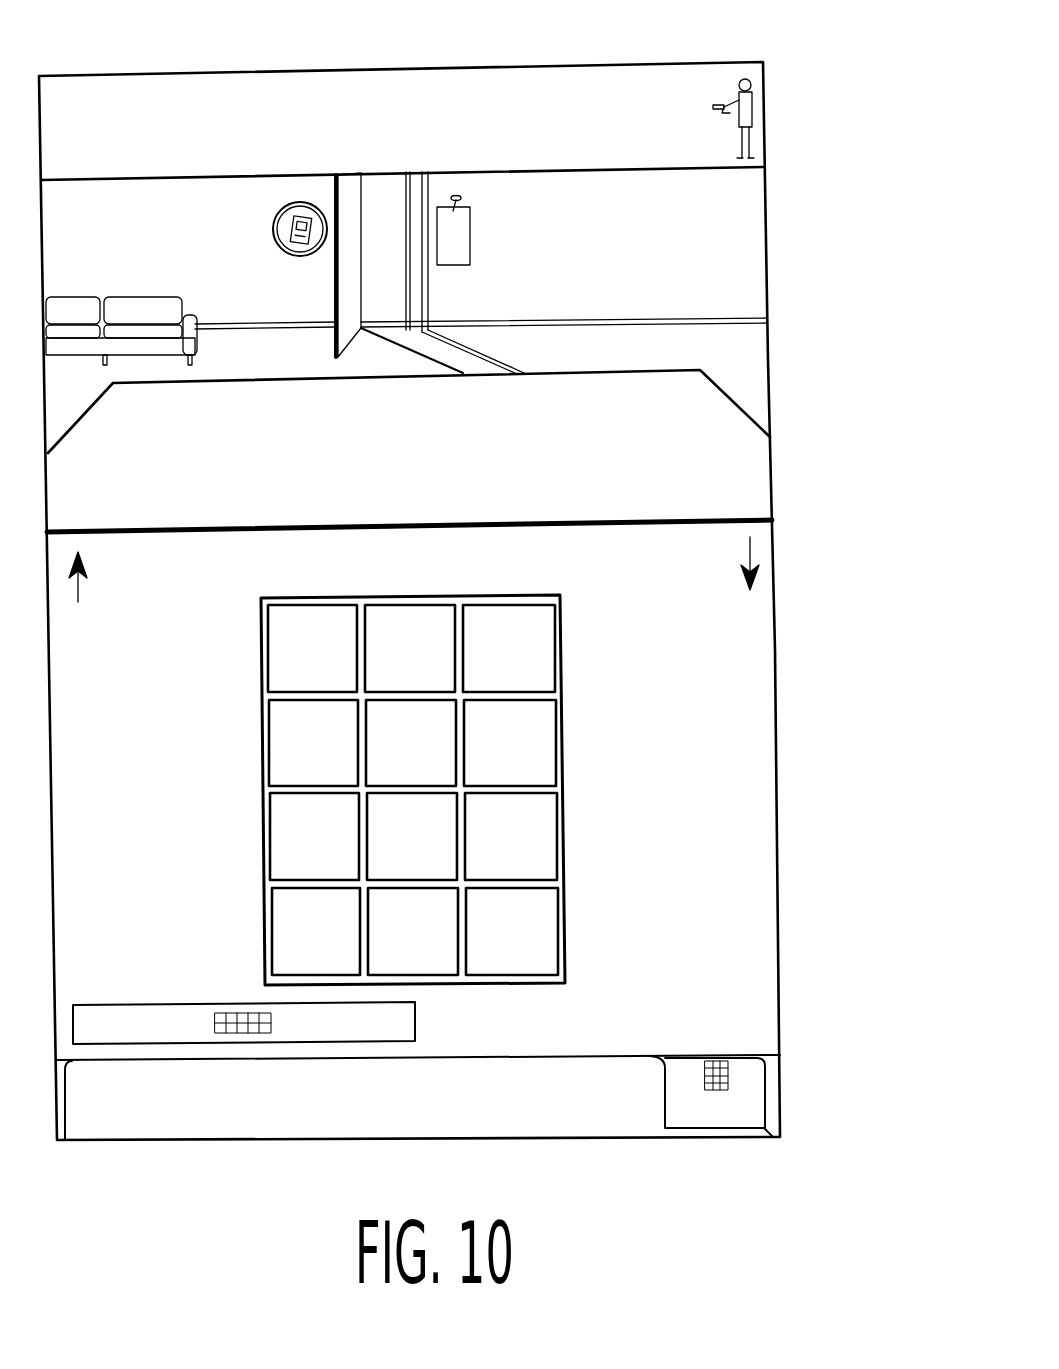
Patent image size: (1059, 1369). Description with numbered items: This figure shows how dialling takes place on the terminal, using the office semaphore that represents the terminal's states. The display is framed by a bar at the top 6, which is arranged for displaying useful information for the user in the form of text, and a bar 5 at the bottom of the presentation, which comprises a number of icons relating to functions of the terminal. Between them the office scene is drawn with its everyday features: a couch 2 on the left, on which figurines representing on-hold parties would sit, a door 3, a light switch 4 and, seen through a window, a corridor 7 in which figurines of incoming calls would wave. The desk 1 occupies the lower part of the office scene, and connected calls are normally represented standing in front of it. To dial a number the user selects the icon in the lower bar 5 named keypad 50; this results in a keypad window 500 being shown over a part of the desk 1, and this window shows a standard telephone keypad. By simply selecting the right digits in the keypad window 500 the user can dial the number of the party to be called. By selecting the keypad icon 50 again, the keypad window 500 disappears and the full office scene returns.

The desk 1 is at (768, 483).
The couch 2 is at (147, 310).
The door 3 is at (350, 267).
The light switch 4 is at (272, 225).
The bar 5 is at (765, 1116).
The bar at the top 6 is at (711, 72).
The corridor 7 is at (760, 232).
The keypad icon 50 is at (730, 1080).
The keypad 500 is at (750, 775).